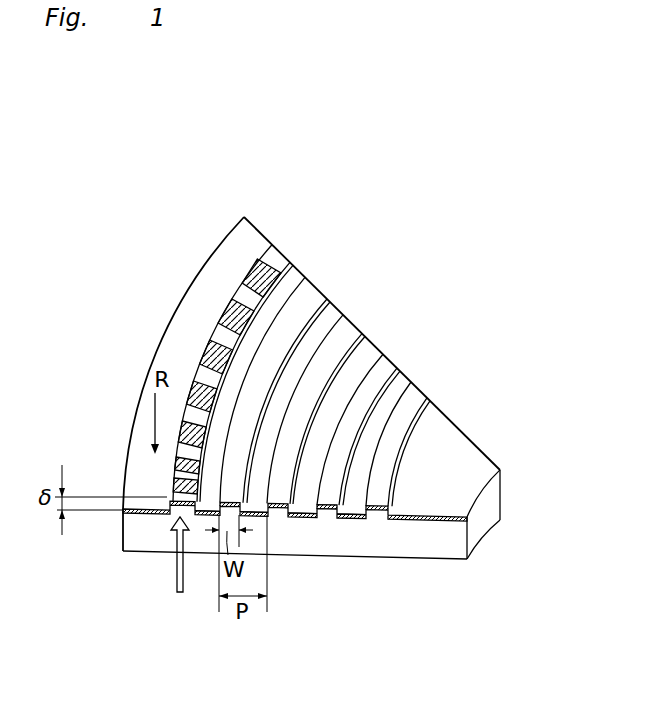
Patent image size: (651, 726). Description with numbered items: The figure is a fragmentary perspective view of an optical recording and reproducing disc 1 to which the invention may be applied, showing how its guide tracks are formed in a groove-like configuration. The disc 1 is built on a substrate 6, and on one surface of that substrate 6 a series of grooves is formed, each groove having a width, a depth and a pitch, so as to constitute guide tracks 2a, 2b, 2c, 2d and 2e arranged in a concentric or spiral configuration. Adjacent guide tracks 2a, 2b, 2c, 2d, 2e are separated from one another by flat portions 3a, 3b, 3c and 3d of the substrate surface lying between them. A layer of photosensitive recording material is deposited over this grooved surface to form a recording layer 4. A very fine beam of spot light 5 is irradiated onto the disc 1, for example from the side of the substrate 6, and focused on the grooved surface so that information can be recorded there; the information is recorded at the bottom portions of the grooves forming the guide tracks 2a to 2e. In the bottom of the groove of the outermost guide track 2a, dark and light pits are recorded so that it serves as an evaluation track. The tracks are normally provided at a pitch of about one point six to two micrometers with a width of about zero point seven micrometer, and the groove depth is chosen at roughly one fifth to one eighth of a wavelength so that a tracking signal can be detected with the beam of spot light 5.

The optical recording and reproducing disc 1 is at (221, 226).
The guide track 2a is at (281, 257).
The guide track 2b is at (317, 302).
The guide track 2c is at (354, 342).
The guide track 2d is at (391, 362).
The guide track 2e is at (424, 411).
The flat portion 3a is at (299, 285).
The flat portion 3b is at (337, 324).
The flat portion 3c is at (373, 358).
The flat portion 3d is at (406, 386).
The recording layer 4 is at (428, 522).
The beam of spot light 5 is at (177, 573).
The substrate 6 is at (356, 540).